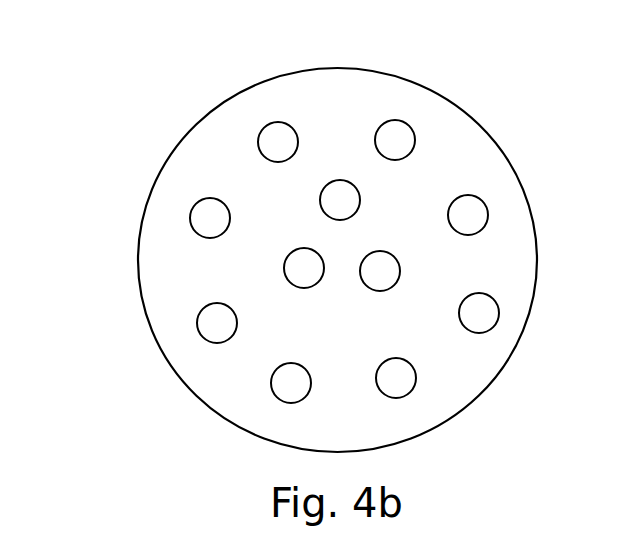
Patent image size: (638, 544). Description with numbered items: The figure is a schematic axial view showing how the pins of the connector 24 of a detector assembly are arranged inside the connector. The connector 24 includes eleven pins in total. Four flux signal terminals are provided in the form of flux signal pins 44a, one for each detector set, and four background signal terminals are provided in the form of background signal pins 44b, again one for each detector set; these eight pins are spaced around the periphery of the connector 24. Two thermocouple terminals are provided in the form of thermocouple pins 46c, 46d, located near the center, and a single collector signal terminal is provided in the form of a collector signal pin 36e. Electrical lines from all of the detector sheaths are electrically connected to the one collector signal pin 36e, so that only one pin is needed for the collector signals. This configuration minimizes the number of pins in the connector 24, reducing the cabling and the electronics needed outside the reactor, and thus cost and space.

The connector 24 is at (156, 138).
The collector signal pin 36e is at (360, 200).
The flux signal pins 44a is at (411, 125).
The background signal pins 44b is at (267, 123).
The thermocouple pin 46c is at (292, 251).
The thermocouple pin 46d is at (400, 276).